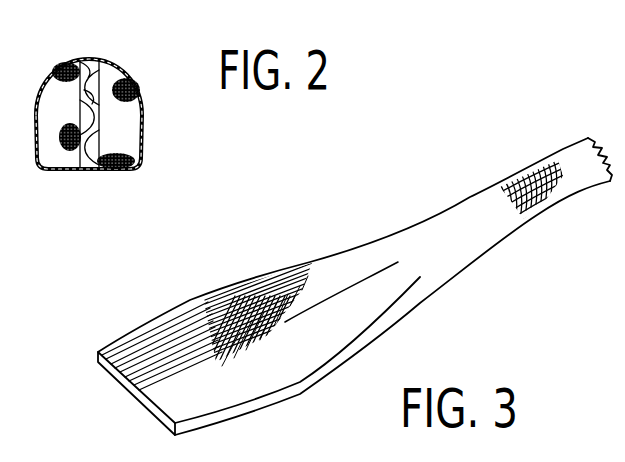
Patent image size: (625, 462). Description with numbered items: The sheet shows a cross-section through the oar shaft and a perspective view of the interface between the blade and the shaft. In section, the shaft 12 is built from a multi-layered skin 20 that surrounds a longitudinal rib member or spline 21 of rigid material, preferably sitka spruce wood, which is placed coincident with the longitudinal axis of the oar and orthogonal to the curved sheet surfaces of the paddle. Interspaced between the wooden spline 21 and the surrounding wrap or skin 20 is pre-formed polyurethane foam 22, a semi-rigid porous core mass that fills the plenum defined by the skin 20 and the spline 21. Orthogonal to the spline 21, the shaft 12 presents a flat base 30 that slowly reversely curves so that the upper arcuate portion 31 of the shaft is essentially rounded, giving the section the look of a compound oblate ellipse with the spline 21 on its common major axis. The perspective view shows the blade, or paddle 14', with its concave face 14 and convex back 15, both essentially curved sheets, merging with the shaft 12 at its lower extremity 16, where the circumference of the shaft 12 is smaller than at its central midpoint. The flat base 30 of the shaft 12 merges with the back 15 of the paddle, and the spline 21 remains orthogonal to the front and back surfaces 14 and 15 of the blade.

In FIG. 2, the shaft 12 is at (148, 114).
In FIG. 3, the shaft 12 is at (531, 161).
In FIG. 3, the concave face 14 is at (360, 217).
In FIG. 3, the paddle 14' is at (221, 301).
In FIG. 3, the convex back 15 is at (289, 398).
In FIG. 3, the lower extremity 16 is at (478, 253).
In FIG. 2, the multi-layered skin 20 is at (113, 62).
In FIG. 2, the spline 21 is at (88, 72).
In FIG. 2, the polyurethane foam 22 is at (149, 140).
In FIG. 2, the flat base 30 is at (103, 173).
In FIG. 2, the upper arcuate portion 31 is at (79, 59).